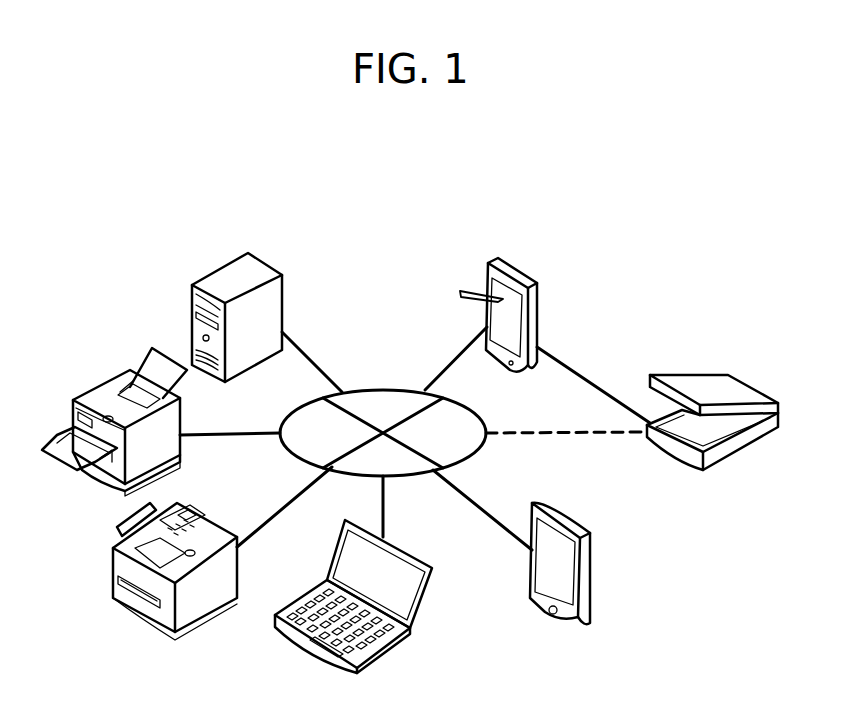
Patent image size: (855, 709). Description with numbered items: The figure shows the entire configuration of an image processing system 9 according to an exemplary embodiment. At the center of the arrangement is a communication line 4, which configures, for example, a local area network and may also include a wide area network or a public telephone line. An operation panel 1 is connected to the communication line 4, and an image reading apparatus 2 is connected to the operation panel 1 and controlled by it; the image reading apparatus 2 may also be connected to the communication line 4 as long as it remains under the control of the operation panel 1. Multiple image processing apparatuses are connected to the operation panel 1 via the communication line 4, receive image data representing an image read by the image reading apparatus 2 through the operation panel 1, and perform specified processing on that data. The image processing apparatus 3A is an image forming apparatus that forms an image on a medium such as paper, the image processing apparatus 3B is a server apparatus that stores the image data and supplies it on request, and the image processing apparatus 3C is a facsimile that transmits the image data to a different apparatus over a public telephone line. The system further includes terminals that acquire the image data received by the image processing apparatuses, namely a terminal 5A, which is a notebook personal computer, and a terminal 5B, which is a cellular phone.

The operation panel 1 is at (535, 322).
The image reading apparatus 2 is at (680, 375).
The image processing apparatus 3A is at (182, 420).
The image processing apparatus 3B is at (284, 305).
The image processing apparatus 3C is at (220, 513).
The communication line 4 is at (367, 388).
The terminal 5A is at (432, 585).
The terminal 5B is at (590, 567).
The image processing system 9 is at (658, 316).